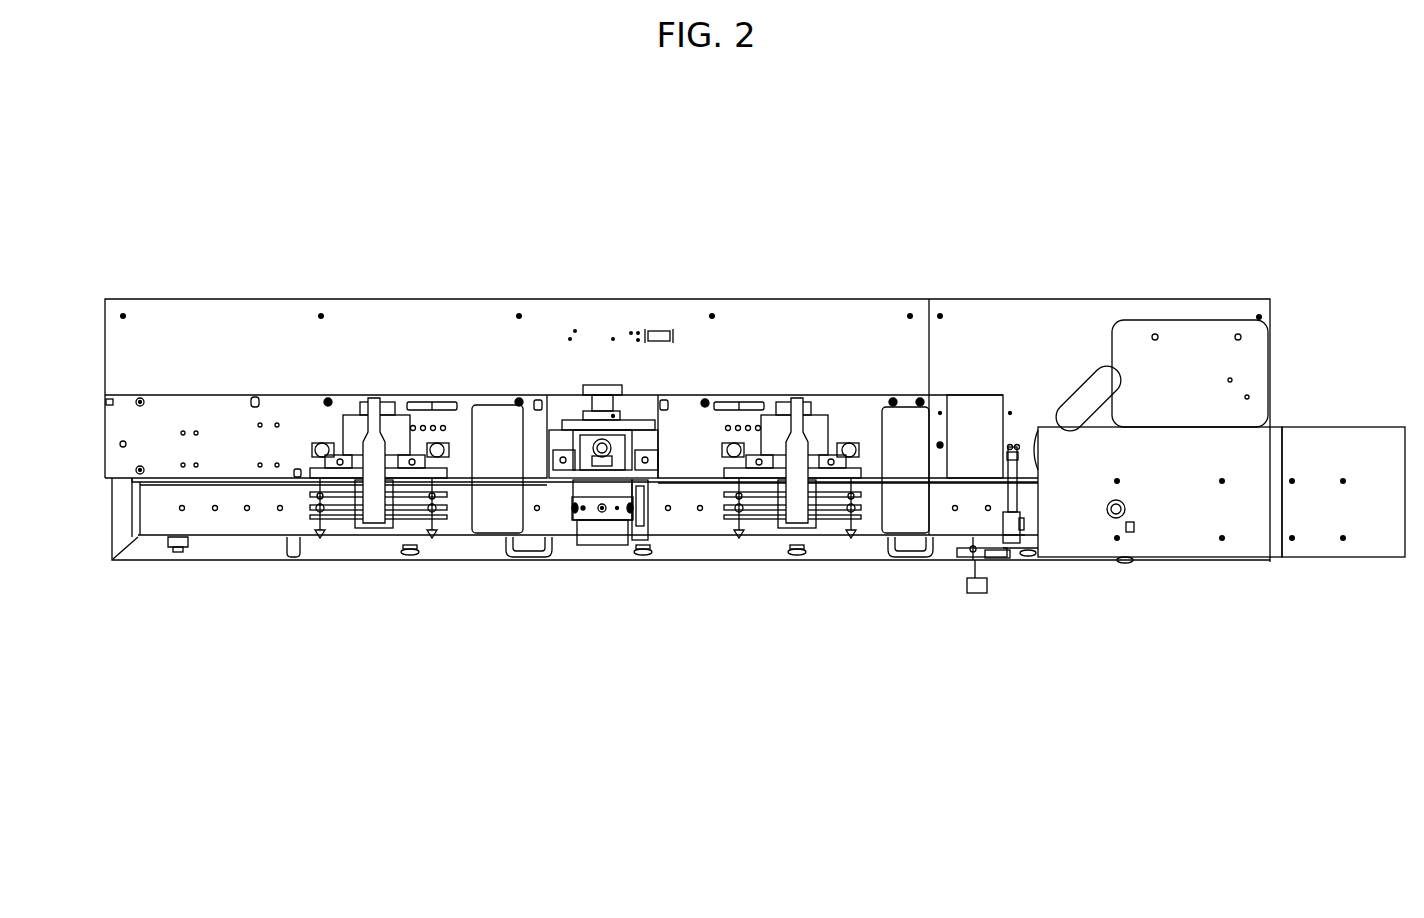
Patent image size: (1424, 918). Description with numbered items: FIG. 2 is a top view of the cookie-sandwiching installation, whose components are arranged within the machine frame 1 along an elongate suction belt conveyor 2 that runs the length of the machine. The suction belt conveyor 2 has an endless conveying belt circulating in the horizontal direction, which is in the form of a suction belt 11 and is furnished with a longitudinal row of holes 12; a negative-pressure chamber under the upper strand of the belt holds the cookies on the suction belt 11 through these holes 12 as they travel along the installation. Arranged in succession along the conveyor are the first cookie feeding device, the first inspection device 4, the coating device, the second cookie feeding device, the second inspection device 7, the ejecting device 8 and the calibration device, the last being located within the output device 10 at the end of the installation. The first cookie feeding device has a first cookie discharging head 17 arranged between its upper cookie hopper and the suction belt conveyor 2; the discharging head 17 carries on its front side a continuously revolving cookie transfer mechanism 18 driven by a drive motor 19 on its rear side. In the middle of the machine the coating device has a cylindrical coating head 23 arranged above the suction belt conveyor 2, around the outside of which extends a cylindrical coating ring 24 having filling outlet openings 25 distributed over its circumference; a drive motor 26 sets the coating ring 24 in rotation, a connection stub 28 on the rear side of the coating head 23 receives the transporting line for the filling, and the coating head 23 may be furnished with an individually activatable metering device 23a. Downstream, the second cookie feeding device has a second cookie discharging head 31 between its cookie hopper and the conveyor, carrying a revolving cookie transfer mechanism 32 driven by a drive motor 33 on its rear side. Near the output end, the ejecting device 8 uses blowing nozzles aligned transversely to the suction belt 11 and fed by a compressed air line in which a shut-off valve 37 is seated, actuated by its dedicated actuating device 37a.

The machine frame 1 is at (198, 312).
The suction belt conveyor 2 is at (248, 550).
The first inspection device 4 is at (496, 512).
The second inspection device 7 is at (903, 517).
The ejecting device 8 is at (1000, 575).
The output device 10 is at (1257, 445).
The suction belt 11 is at (206, 520).
The holes 12 is at (180, 511).
The first cookie discharging head 17 is at (396, 384).
The cookie transfer mechanism 18 is at (340, 522).
The drive motor 19 is at (348, 422).
The coating head 23 is at (620, 530).
The metering device 23a is at (575, 414).
The coating ring 24 is at (583, 511).
The filling outlet openings 25 is at (602, 512).
The drive motor 26 is at (618, 433).
The connection stub 28 is at (604, 383).
The second cookie discharging head 31 is at (808, 382).
The cookie transfer mechanism 32 is at (766, 522).
The drive motor 33 is at (778, 422).
The shut-off valve 37 is at (973, 562).
The actuating device 37a is at (977, 594).